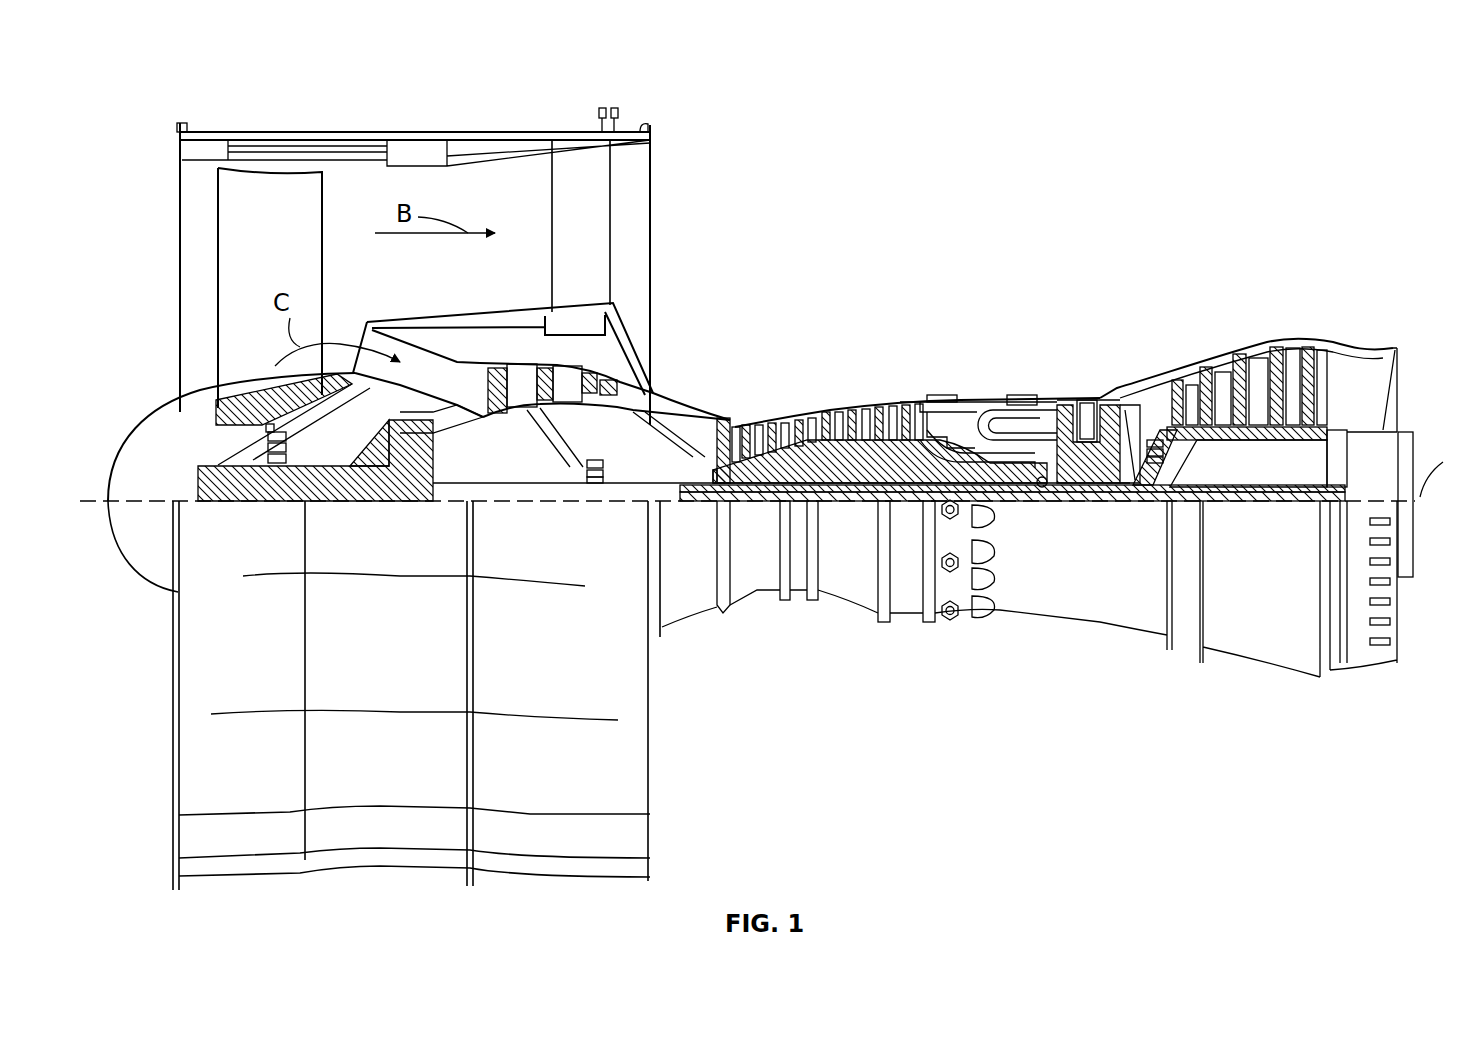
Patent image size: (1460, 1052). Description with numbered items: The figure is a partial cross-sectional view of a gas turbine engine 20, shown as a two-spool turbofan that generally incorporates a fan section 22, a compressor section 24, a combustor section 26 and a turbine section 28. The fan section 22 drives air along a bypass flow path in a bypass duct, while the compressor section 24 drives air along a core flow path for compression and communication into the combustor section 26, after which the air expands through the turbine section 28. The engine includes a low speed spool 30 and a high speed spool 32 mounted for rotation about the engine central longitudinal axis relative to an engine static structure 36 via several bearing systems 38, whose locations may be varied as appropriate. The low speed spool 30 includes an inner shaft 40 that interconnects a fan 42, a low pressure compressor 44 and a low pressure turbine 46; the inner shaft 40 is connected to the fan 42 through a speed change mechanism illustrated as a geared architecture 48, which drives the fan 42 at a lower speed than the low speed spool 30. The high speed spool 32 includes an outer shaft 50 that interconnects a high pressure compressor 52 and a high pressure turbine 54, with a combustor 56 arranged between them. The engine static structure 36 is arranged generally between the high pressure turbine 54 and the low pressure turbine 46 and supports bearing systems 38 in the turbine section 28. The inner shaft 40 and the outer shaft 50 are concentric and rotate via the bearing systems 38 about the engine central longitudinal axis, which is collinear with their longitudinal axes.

The gas turbine engine 20 is at (1287, 100).
The fan section 22 is at (400, 126).
The compressor section 24 is at (835, 320).
The combustor section 26 is at (994, 336).
The turbine section 28 is at (1149, 320).
The low speed spool 30 is at (866, 509).
The high speed spool 32 is at (927, 456).
The engine static structure 36 is at (904, 627).
The bearing systems 38 is at (275, 468).
The inner shaft 40 is at (668, 504).
The fan 42 is at (278, 254).
The low pressure compressor 44 is at (560, 372).
The low pressure turbine 46 is at (1252, 360).
The geared architecture 48 is at (415, 470).
The outer shaft 50 is at (1047, 491).
The high pressure compressor 52 is at (800, 430).
The high pressure turbine 54 is at (1090, 397).
The combustor 56 is at (978, 372).